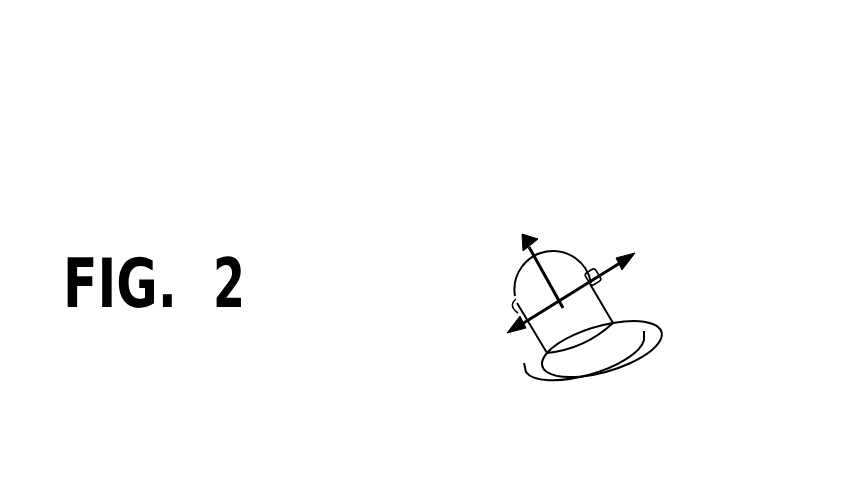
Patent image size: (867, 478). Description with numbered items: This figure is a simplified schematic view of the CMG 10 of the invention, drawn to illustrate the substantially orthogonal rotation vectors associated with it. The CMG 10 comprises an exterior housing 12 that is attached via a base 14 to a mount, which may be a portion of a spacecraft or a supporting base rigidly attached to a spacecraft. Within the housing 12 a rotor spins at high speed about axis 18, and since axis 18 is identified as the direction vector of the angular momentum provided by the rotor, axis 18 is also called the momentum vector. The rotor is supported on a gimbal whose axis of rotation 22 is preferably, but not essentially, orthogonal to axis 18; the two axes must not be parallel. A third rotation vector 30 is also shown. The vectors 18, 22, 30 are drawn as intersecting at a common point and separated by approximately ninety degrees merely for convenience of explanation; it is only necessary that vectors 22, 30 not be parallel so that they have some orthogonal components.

The CMG 10 is at (640, 195).
The exterior housing 12 is at (523, 281).
The base 14 is at (640, 334).
The rotor axis 18 is at (507, 331).
The gimbal axis of rotation 22 is at (632, 262).
The rotation vector 30 is at (534, 240).